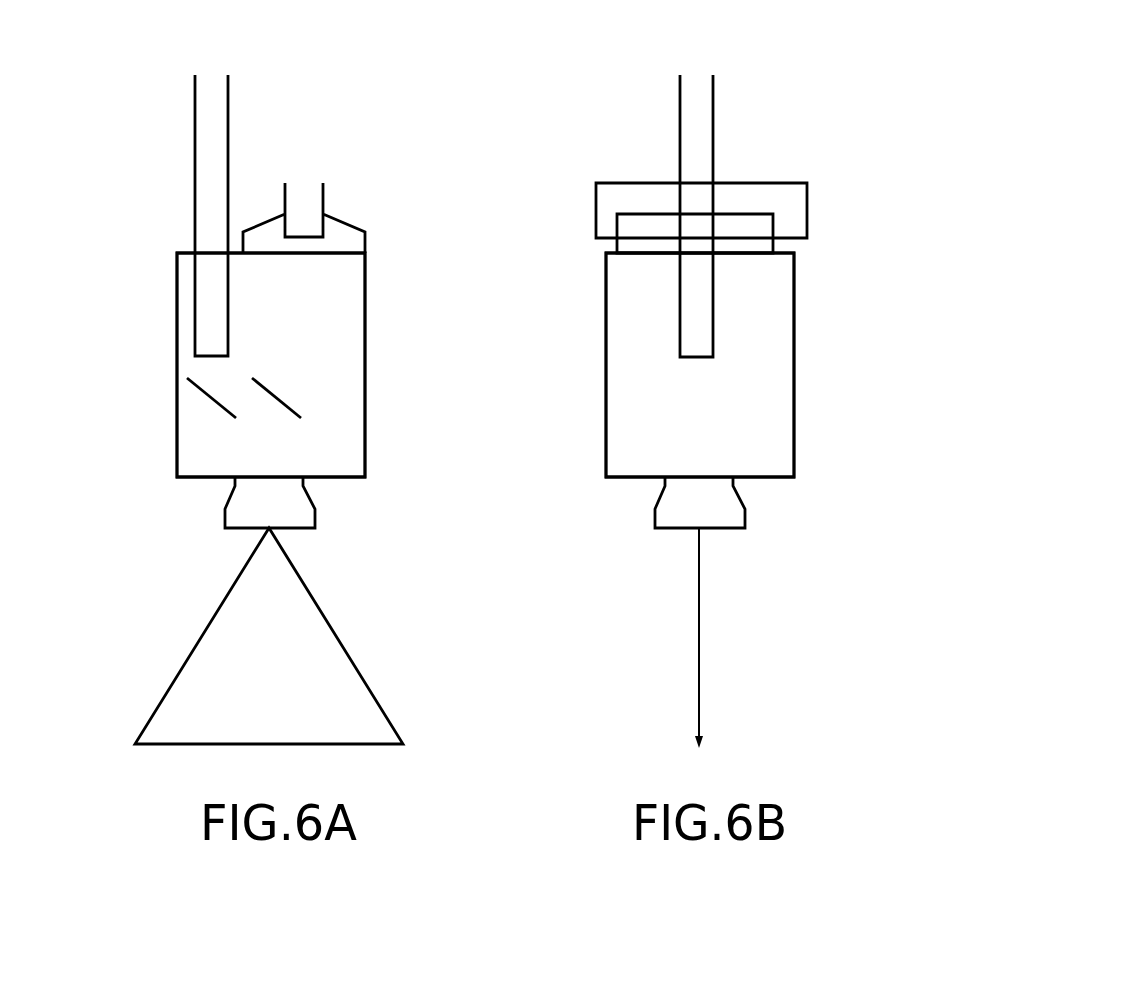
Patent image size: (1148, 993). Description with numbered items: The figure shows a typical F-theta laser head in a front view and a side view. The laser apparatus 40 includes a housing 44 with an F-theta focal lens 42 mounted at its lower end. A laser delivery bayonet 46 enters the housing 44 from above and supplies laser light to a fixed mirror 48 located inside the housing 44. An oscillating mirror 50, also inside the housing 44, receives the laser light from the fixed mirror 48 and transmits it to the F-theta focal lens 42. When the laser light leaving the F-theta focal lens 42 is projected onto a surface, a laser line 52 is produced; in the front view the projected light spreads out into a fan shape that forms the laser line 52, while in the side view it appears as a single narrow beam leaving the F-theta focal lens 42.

In FIG. 6A, the laser apparatus 40 is at (109, 96).
In FIG. 6B, the laser apparatus 40 is at (891, 96).
In FIG. 6A, the F-theta focal lens 42 is at (316, 511).
In FIG. 6B, the F-theta focal lens 42 is at (747, 511).
In FIG. 6A, the housing 44 is at (322, 312).
In FIG. 6B, the housing 44 is at (716, 419).
In FIG. 6A, the laser delivery bayonet 46 is at (195, 343).
In FIG. 6B, the laser delivery bayonet 46 is at (700, 317).
In FIG. 6A, the fixed mirror 48 is at (213, 398).
In FIG. 6A, the oscillating mirror 50 is at (278, 400).
In FIG. 6A, the laser line 52 is at (277, 744).
In FIG. 6B, the laser line 52 is at (703, 743).